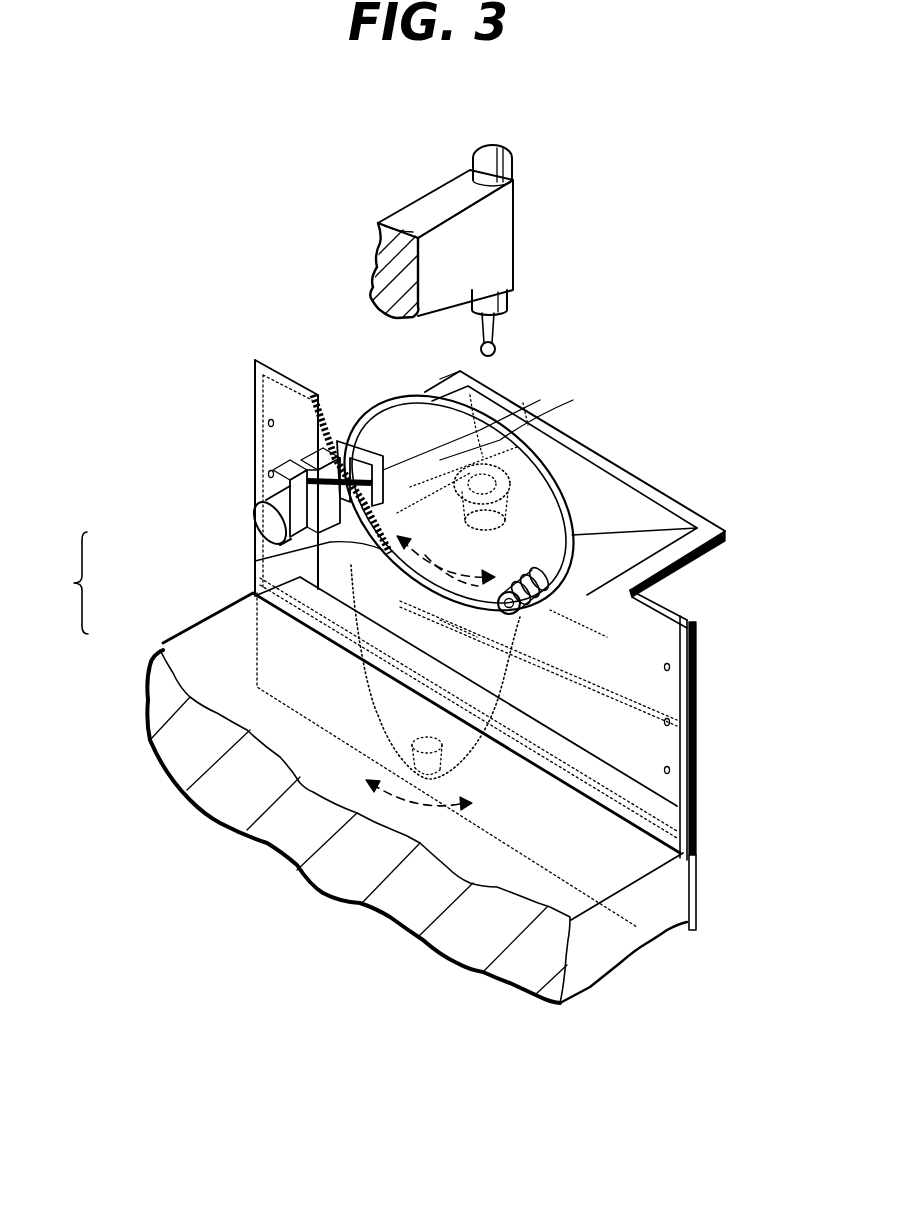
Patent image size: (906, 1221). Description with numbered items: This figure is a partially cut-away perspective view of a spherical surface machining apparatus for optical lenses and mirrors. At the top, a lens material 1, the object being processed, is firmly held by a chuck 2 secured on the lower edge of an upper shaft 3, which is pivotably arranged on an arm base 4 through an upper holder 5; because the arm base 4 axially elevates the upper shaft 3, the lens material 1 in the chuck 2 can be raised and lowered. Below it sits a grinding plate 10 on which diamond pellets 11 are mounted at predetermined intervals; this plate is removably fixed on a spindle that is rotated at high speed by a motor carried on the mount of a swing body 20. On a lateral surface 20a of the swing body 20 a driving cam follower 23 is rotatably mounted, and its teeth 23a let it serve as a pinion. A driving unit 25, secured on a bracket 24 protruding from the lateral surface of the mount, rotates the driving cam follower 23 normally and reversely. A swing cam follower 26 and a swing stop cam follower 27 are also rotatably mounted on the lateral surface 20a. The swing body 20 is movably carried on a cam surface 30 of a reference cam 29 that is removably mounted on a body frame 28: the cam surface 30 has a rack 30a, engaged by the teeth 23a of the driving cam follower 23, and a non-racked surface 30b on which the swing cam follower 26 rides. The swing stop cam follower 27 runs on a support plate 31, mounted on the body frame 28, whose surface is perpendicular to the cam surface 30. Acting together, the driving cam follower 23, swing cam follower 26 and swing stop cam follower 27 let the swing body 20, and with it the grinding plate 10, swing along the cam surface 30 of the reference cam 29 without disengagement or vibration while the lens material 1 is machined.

The lens material 1 is at (560, 365).
The chuck 2 is at (500, 347).
The upper shaft 3 is at (503, 331).
The arm base 4 is at (503, 207).
The upper holder 5 is at (507, 303).
The grinding plate 10 is at (617, 467).
The diamond pellets 11 is at (475, 485).
The swing body 20 is at (562, 507).
The lateral surface of the swing body 20a is at (410, 440).
The driving cam follower 23 is at (523, 403).
The teeth 23a is at (366, 443).
The bracket 24 is at (340, 452).
The driving unit 25 is at (257, 490).
The swing cam follower 26 is at (618, 730).
The swing stop cam follower 27 is at (303, 803).
The body frame 28 is at (630, 960).
The reference cam 29 is at (633, 617).
The cam surface 30 is at (62, 583).
The rack 30a is at (255, 562).
The non-racked surface 30b is at (340, 646).
The support plate 31 is at (697, 880).